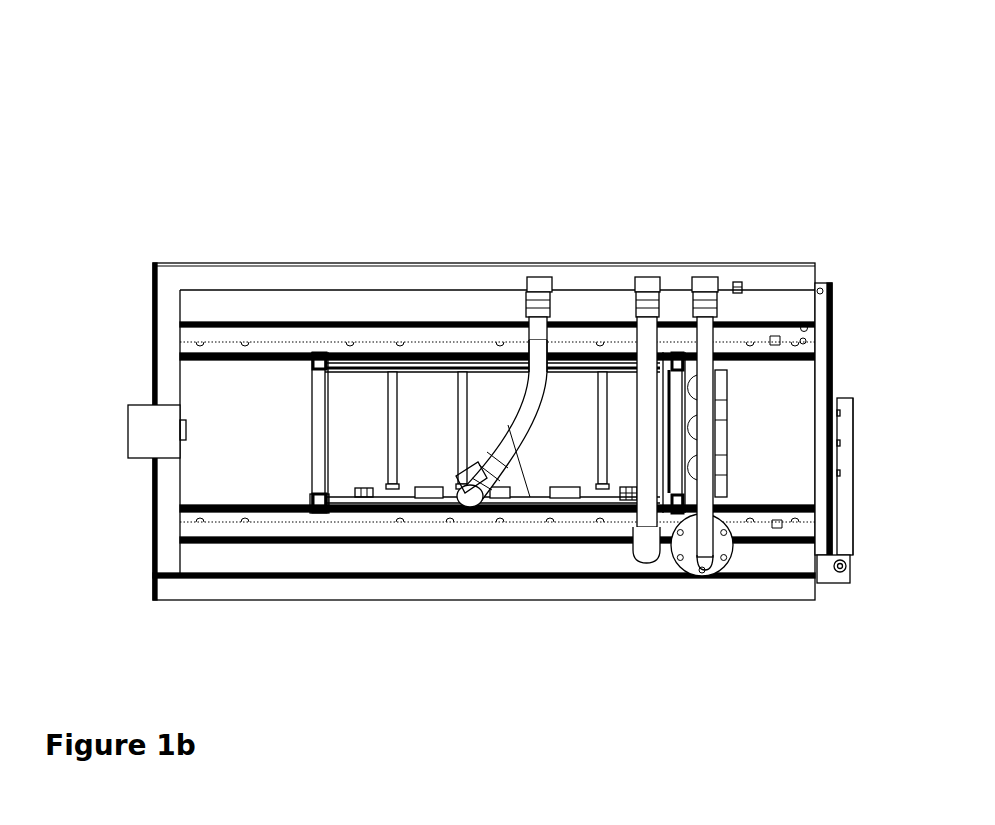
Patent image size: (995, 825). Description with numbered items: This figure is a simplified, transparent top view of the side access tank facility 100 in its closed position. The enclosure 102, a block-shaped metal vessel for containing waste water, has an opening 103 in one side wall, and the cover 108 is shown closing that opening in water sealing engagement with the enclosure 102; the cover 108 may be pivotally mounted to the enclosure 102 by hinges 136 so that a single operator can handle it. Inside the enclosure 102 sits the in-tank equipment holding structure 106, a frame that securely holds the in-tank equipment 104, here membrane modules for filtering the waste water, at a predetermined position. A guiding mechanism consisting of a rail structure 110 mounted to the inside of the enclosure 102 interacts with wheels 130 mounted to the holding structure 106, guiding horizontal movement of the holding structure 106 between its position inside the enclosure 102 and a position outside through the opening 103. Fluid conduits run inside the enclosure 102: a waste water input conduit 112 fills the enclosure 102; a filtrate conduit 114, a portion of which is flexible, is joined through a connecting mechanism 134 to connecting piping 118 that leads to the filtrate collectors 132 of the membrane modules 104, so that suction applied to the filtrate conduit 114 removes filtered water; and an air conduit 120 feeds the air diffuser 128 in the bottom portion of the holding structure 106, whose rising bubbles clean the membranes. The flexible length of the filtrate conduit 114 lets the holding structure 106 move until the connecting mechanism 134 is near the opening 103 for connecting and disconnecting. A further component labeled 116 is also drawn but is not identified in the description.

The side access tank facility 100 is at (612, 47).
The enclosure 102 is at (188, 278).
The opening 103 is at (802, 321).
The in-tank equipment 104 is at (353, 450).
The in-tank equipment holding structure 106 is at (420, 350).
The cover 108 is at (839, 393).
The rail structure 110 is at (774, 332).
The waste water input conduit 112 is at (645, 272).
The filtrate conduit 114 is at (536, 276).
The flexible line 116 is at (510, 428).
The connecting piping 118 is at (588, 500).
The air conduit 120 is at (700, 272).
The air diffuser 128 is at (148, 428).
The wheels 130 is at (312, 354).
The filtrate collector 132 is at (332, 517).
The connecting mechanism 134 is at (472, 509).
The hinges 136 is at (843, 574).